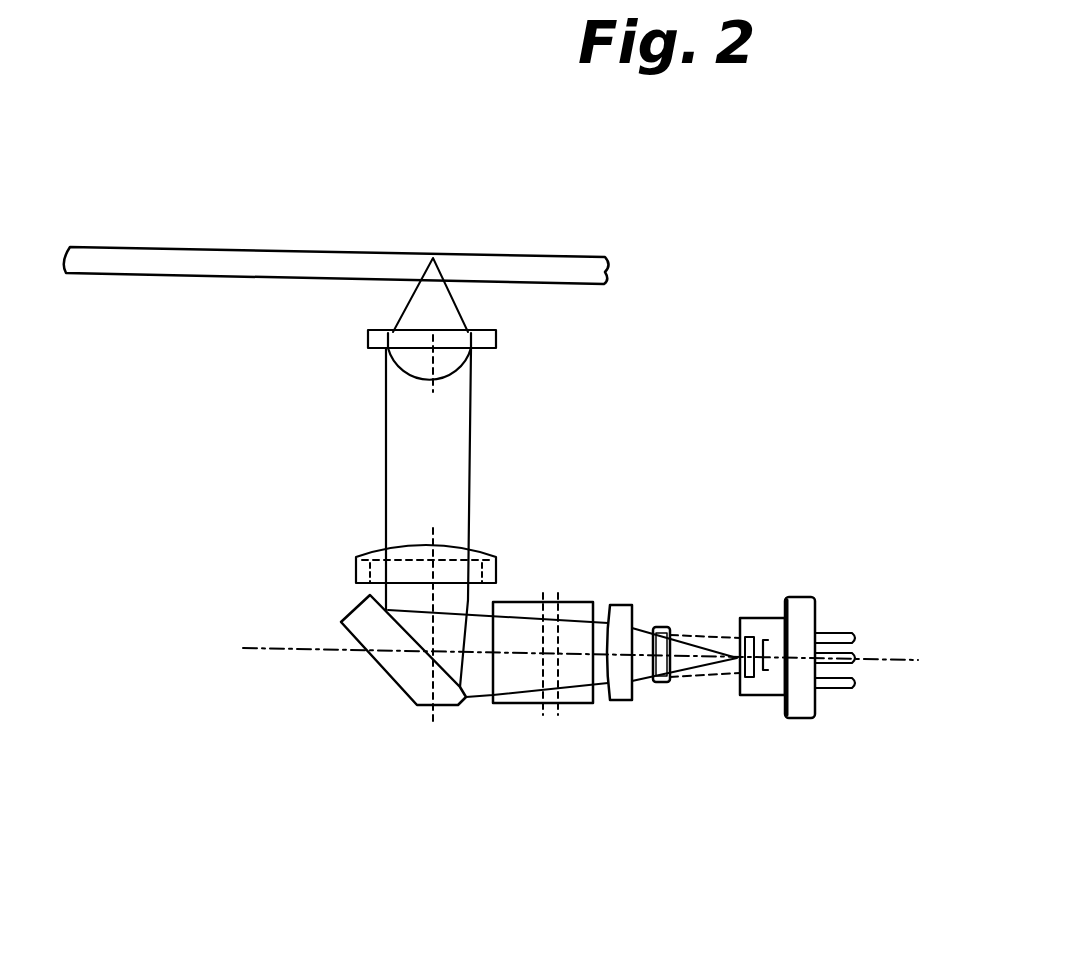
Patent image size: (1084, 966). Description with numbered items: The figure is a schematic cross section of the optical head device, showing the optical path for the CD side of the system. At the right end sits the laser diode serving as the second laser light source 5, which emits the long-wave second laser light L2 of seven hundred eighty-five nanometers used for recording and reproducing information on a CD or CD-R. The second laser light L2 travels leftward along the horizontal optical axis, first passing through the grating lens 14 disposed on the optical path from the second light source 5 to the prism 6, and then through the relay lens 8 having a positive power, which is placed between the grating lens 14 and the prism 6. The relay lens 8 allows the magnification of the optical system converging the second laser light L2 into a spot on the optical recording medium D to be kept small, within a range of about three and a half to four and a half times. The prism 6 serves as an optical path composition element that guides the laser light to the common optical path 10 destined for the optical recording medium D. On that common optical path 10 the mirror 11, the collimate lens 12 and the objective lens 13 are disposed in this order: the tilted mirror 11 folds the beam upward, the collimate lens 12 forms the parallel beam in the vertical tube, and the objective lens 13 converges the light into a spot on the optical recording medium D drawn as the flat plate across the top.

The optical recording medium D is at (577, 267).
The common optical path 10 is at (268, 343).
The objective lens 13 is at (375, 340).
The collimate lens 12 is at (362, 556).
The mirror 11 is at (370, 615).
The prism 6 is at (530, 692).
The relay lens 8 is at (623, 618).
The grating lens 14 is at (663, 685).
The second laser light L2 is at (695, 637).
The laser diode (second laser light source) 5 is at (803, 598).